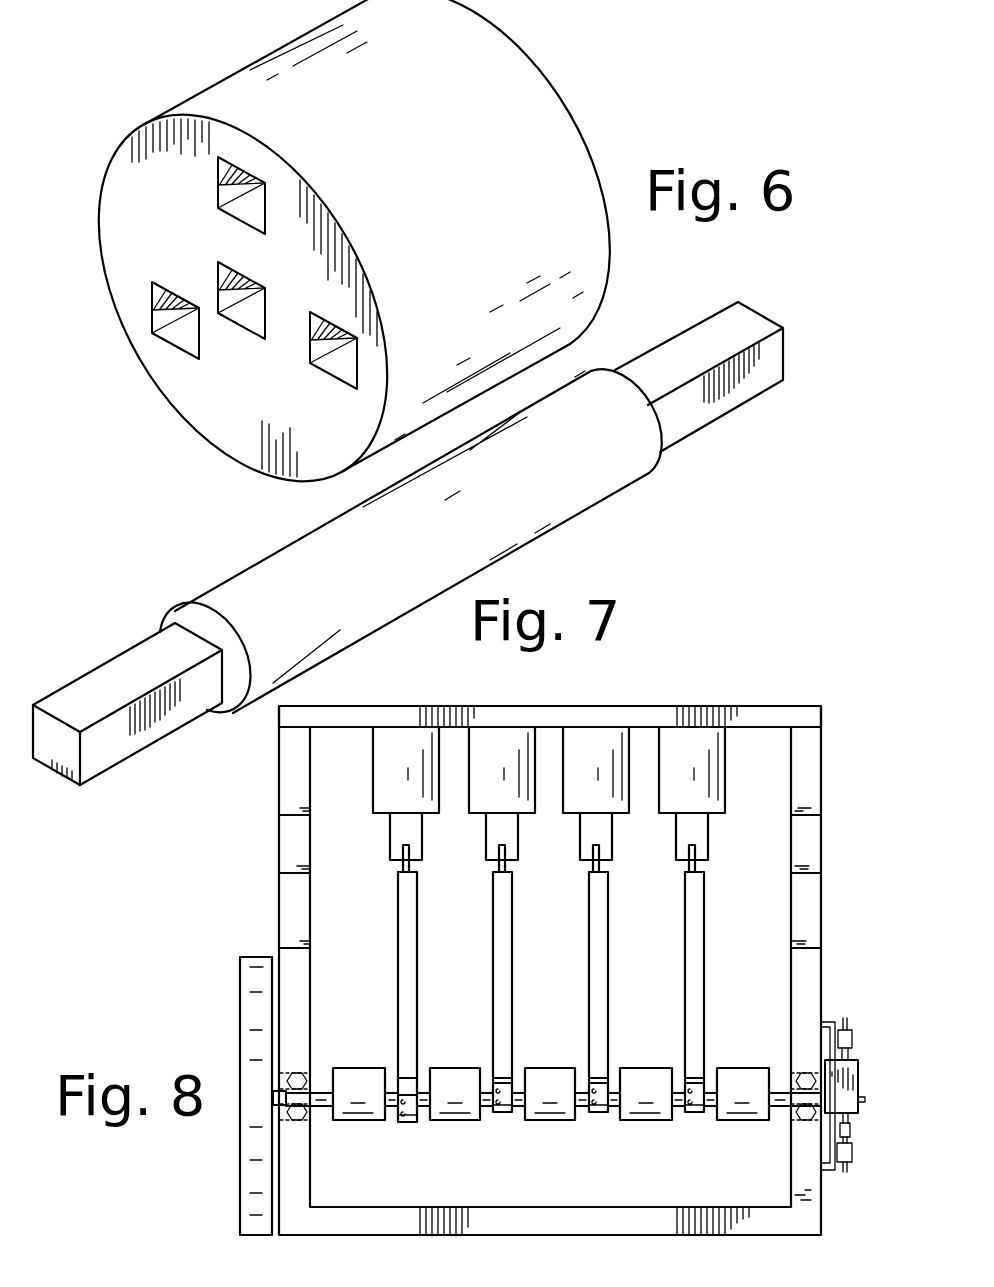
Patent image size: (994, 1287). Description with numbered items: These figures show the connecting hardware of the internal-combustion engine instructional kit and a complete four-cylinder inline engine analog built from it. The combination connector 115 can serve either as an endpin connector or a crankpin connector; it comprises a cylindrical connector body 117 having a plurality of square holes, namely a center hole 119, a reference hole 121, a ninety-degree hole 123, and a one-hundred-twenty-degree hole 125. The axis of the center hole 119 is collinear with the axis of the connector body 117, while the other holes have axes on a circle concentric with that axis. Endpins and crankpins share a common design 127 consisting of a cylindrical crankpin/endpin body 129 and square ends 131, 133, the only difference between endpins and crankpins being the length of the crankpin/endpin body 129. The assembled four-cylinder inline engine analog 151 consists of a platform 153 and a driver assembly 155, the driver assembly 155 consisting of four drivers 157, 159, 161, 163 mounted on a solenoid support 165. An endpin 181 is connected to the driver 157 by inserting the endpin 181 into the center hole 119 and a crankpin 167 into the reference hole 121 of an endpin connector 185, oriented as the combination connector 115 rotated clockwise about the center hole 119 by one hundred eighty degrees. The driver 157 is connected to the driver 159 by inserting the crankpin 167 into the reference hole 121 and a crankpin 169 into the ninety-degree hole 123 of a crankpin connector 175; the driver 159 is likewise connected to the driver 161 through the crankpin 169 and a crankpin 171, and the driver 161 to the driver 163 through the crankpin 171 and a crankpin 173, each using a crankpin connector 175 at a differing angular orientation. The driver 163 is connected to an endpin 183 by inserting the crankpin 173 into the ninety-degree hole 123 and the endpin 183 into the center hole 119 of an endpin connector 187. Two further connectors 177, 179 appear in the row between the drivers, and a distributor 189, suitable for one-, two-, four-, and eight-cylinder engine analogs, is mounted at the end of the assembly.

In FIG. 6, the combination connector 115 is at (172, 25).
In FIG. 6, the connector body 117 is at (532, 144).
In FIG. 6, the center hole 119 is at (245, 318).
In FIG. 6, the reference hole 121 is at (219, 183).
In FIG. 6, the 90-degree hole 123 is at (342, 367).
In FIG. 6, the 120-degree hole 125 is at (180, 333).
In FIG. 7, the common design 127 is at (146, 582).
In FIG. 7, the crankpin/endpin body 129 is at (590, 484).
In FIG. 7, the square end 131 is at (103, 680).
In FIG. 7, the square end 133 is at (687, 352).
In FIG. 8, the 4-cylinder inline engine analog 151 is at (197, 905).
In FIG. 8, the platform 153 is at (840, 793).
In FIG. 8, the driver assembly 155 is at (381, 946).
In FIG. 8, the driver 157 is at (408, 1148).
In FIG. 8, the driver 159 is at (503, 1148).
In FIG. 8, the driver 161 is at (600, 1148).
In FIG. 8, the driver 163 is at (695, 1148).
In FIG. 8, the solenoid support 165 is at (598, 718).
In FIG. 8, the crankpin 167 is at (395, 1075).
In FIG. 8, the crankpin 169 is at (490, 1075).
In FIG. 8, the crankpin 171 is at (586, 1075).
In FIG. 8, the crankpin 173 is at (682, 1075).
In FIG. 8, the crankpin connector 175 is at (458, 1080).
In FIG. 8, the cam 177 is at (555, 1080).
In FIG. 8, the cam 179 is at (650, 1080).
In FIG. 8, the endpin 181 is at (325, 1107).
In FIG. 8, the endpin 183 is at (773, 1066).
In FIG. 8, the endpin connector 185 is at (362, 1080).
In FIG. 8, the endpin connector 187 is at (745, 1080).
In FIG. 8, the distributor 189 is at (853, 1006).